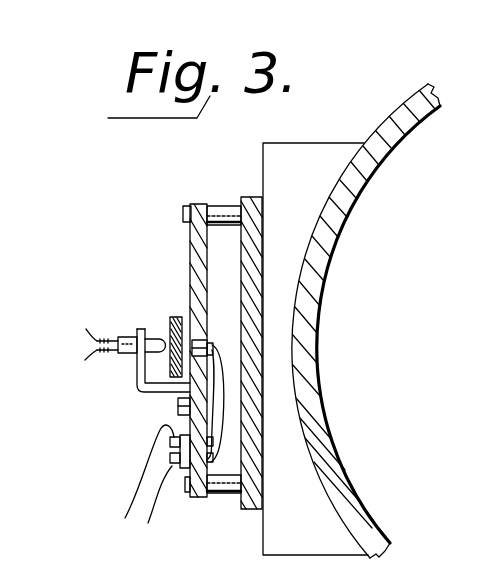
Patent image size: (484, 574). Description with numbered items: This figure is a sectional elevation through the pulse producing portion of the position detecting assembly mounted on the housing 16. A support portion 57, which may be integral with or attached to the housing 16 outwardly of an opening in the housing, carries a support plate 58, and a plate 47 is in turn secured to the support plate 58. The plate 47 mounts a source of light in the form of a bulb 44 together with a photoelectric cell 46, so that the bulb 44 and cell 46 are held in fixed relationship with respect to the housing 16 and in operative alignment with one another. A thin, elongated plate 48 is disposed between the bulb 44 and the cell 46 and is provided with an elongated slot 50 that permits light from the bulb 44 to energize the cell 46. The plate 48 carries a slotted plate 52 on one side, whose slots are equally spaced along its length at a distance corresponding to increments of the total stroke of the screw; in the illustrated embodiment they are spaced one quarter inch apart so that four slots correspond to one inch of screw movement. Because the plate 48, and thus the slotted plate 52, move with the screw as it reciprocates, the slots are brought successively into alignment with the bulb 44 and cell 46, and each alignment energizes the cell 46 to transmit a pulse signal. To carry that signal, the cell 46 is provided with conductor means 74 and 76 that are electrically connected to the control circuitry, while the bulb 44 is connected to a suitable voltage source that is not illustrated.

The housing 16 is at (392, 113).
The bulb 44 is at (150, 336).
The photoelectric cell 46 is at (200, 338).
The plate 47 is at (196, 204).
The thin elongated plate 48 is at (172, 328).
The elongated slot 50 is at (170, 355).
The slotted plate 52 is at (160, 395).
The support portion 57 is at (277, 150).
The support plate 58 is at (245, 197).
The conductor means 74 is at (160, 507).
The conductor means 76 is at (143, 468).